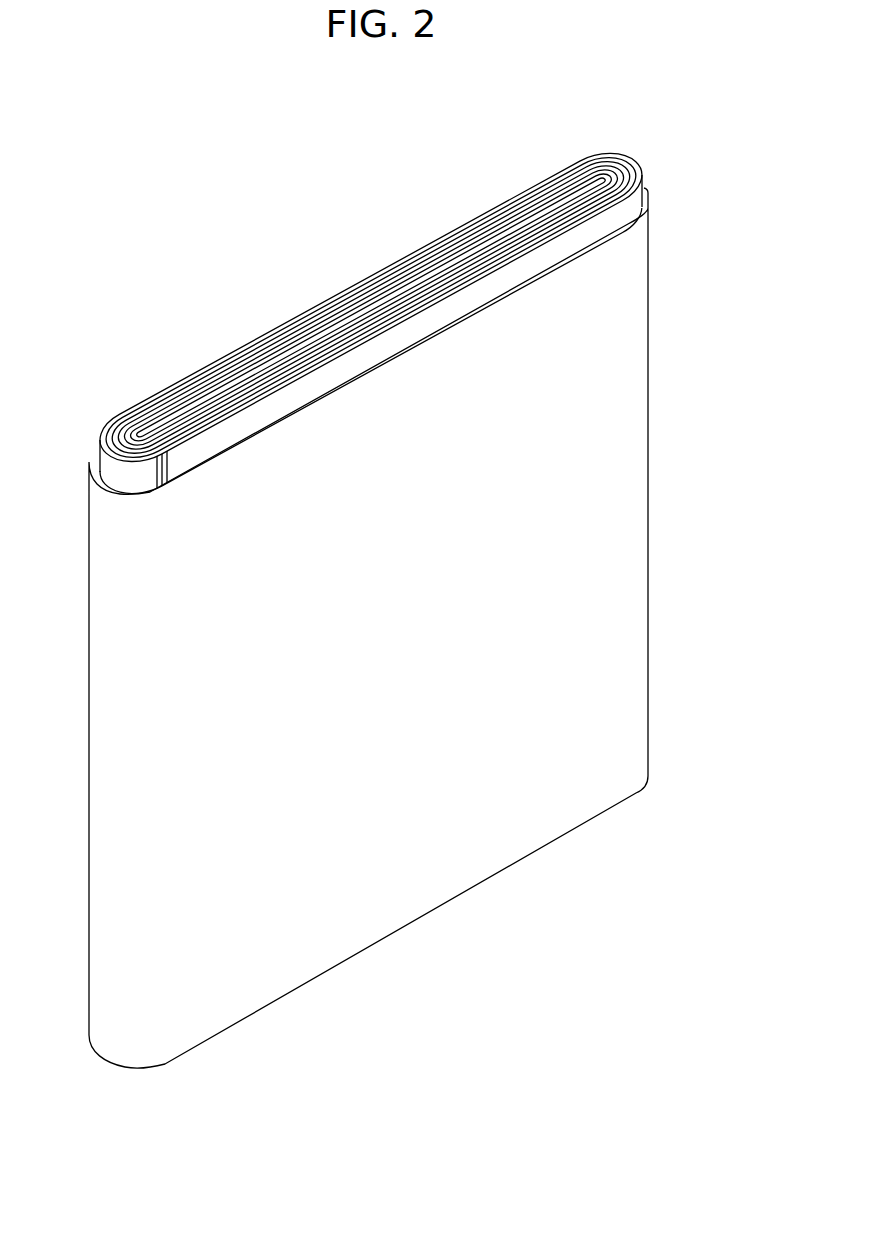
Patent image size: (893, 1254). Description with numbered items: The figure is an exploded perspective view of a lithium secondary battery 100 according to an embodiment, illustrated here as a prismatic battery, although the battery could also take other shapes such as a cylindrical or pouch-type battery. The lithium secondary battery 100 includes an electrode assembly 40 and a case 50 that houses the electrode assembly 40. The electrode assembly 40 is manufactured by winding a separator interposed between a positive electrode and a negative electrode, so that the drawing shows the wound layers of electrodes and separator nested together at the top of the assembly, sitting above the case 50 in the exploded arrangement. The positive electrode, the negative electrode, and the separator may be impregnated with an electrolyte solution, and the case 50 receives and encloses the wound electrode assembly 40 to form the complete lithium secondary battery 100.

The lithium secondary battery 100 is at (215, 187).
The electrode assembly 40 is at (377, 251).
The case 50 is at (632, 473).